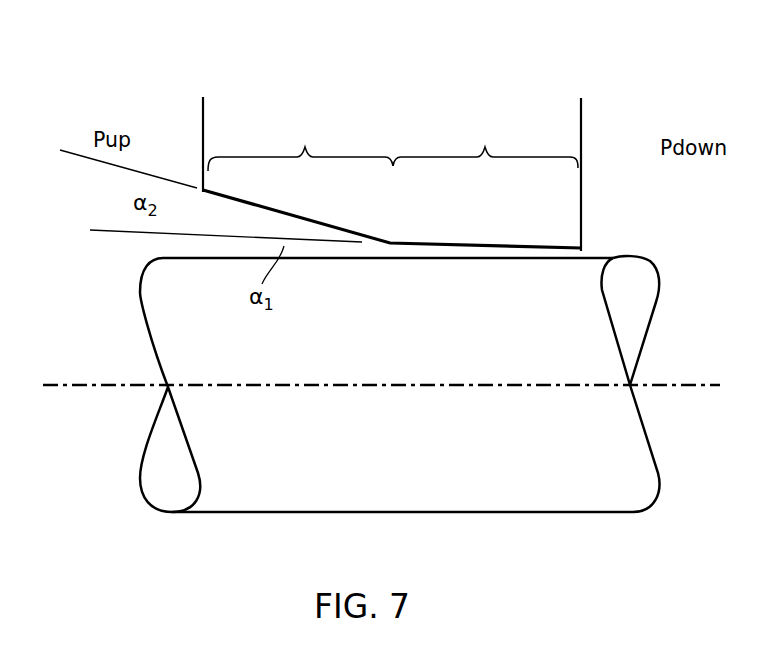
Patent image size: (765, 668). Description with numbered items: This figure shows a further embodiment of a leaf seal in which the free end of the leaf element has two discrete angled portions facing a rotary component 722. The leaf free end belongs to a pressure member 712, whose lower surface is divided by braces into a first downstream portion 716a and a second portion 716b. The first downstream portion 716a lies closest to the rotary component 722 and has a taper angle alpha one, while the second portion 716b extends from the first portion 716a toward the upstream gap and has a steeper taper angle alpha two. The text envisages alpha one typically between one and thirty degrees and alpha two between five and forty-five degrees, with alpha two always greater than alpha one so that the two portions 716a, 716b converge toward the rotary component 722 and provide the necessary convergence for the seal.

The pressure member 712 is at (493, 95).
The first downstream portion 716a is at (485, 143).
The second portion 716b is at (300, 145).
The roller 722 is at (372, 331).